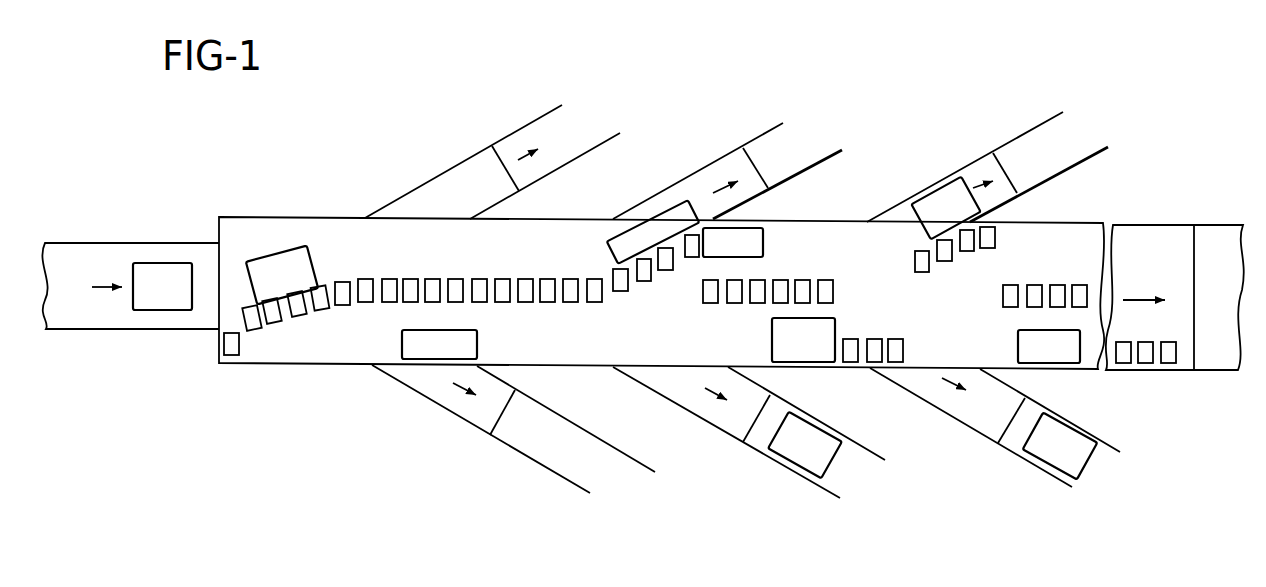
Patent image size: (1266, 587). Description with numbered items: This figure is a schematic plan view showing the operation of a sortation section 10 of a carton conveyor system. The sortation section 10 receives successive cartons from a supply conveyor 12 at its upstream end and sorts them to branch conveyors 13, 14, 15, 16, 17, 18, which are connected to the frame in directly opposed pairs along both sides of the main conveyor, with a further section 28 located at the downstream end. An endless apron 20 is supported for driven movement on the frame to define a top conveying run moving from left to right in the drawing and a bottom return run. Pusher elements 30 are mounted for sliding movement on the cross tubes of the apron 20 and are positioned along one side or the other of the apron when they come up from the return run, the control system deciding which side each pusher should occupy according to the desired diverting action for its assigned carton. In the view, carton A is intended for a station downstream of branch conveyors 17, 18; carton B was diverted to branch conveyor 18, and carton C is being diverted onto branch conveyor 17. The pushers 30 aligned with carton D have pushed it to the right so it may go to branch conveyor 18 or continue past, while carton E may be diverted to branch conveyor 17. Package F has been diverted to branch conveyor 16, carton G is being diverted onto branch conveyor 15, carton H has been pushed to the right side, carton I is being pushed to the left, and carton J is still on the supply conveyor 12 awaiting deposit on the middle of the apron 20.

The sortation section 10 is at (305, 380).
The supply conveyor 12 is at (97, 318).
The branch conveyor 13 is at (418, 195).
The branch conveyor 14 is at (438, 395).
The branch conveyor 15 is at (708, 175).
The branch conveyor 16 is at (692, 398).
The branch conveyor 17 is at (975, 168).
The branch conveyor 18 is at (947, 405).
The endless apron 20 is at (280, 230).
The further section 28 is at (1214, 362).
The pusher element 30 is at (547, 278).